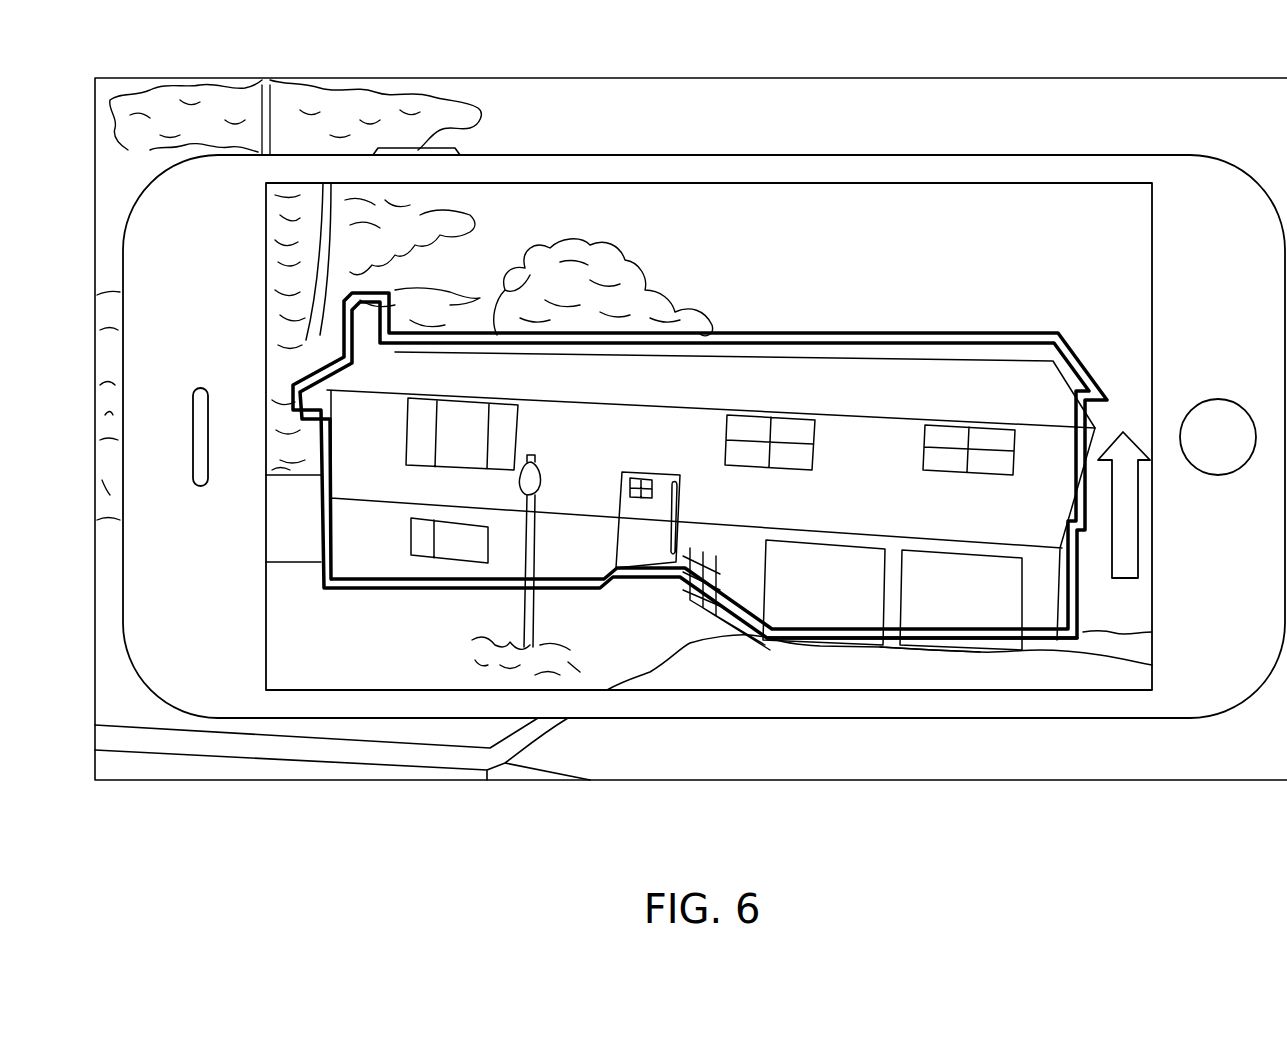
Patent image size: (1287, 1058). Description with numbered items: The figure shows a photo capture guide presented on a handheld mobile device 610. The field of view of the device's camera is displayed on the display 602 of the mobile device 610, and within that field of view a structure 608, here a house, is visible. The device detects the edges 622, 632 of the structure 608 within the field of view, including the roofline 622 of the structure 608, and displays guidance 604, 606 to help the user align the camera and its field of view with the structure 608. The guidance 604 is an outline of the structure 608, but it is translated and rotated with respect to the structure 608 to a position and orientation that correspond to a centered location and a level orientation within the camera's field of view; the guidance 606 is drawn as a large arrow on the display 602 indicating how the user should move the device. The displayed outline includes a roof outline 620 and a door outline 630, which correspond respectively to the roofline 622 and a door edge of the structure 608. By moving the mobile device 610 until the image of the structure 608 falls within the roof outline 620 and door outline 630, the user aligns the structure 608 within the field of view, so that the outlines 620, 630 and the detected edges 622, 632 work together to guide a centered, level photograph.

The display 602 is at (745, 200).
The guidance 604 is at (806, 332).
The guidance 606 is at (1128, 440).
The structure 608 is at (870, 490).
The mobile device 610 is at (1038, 118).
The roof outline 620 is at (876, 341).
The roofline 622 is at (1000, 350).
The door outline 630 is at (976, 644).
The edge 632 is at (937, 652).